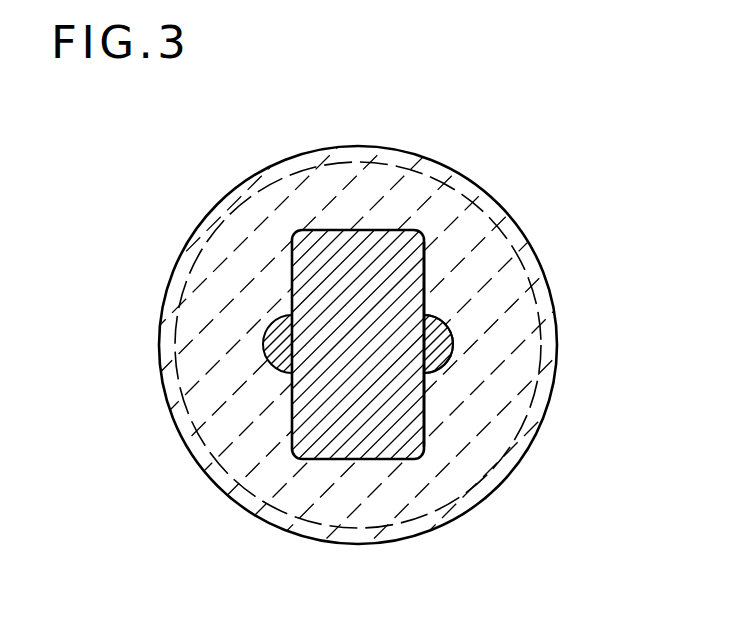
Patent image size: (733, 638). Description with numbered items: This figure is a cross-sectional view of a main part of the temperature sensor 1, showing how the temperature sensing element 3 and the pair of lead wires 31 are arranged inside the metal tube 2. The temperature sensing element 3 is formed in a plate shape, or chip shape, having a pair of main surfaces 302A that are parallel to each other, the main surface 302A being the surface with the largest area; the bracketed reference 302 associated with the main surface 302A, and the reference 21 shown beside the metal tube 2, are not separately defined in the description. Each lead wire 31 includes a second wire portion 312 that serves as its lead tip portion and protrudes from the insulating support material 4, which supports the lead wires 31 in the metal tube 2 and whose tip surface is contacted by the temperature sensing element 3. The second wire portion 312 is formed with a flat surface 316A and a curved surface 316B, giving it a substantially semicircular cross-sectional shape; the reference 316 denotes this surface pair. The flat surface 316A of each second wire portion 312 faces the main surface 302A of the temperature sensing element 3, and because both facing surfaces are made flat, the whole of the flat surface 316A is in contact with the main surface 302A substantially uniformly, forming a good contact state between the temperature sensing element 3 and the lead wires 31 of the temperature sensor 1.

The temperature sensor 1 is at (516, 152).
The metal tube 2 is at (180, 262).
The insulating covering 21 is at (287, 345).
The temperature sensing element 3 is at (372, 385).
The conductor outer surface 302 is at (323, 460).
The main surface 302A is at (430, 430).
The lead wire 31 is at (443, 360).
The second wire portion 312 is at (438, 343).
The protrusion surface 316 is at (550, 378).
The flat surface 316A is at (427, 329).
The curved surface 316B is at (447, 368).
The insulating support material 4 is at (240, 455).